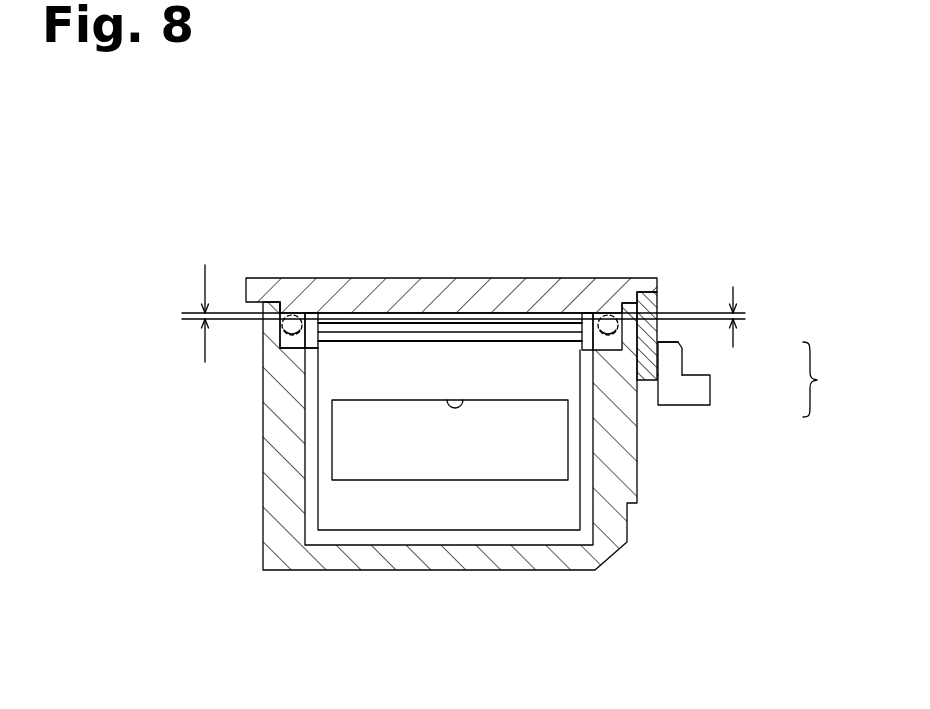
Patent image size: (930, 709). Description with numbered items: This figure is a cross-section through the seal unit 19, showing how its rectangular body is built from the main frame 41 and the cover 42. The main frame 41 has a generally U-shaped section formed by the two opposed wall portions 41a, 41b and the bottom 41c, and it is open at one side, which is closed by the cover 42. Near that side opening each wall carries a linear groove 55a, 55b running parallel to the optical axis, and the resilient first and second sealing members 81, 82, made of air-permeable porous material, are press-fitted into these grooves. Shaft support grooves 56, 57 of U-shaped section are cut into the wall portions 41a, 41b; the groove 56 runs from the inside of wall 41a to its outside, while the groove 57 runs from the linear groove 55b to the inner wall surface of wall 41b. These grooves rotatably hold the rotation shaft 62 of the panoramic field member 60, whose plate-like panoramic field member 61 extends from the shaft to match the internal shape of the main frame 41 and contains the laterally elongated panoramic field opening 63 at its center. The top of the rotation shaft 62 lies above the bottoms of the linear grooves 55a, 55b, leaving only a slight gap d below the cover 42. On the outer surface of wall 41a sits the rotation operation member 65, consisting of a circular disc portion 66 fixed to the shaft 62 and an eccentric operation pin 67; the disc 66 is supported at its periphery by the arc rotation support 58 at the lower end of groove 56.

The seal unit 19 is at (470, 247).
The main frame 41 is at (637, 492).
The opposed wall portion 41a is at (637, 462).
The opposed wall portion 41b is at (272, 468).
The bottom 41c is at (517, 563).
The cover 42 is at (542, 288).
The linear groove 55a is at (618, 307).
The linear groove 55b is at (288, 307).
The shaft support groove 56 is at (660, 348).
The shaft support groove 57 is at (267, 348).
The arc rotation support 58 is at (655, 385).
The panoramic field member 60 is at (415, 332).
The panoramic field member 61 is at (410, 515).
The rotation shaft 62 is at (280, 343).
The panoramic field opening 63 is at (460, 400).
The rotation operation member 65 is at (826, 379).
The circular disc portion 66 is at (657, 333).
The operation pin 67 is at (692, 390).
The first sealing member 81 is at (290, 303).
The second sealing member 82 is at (607, 307).